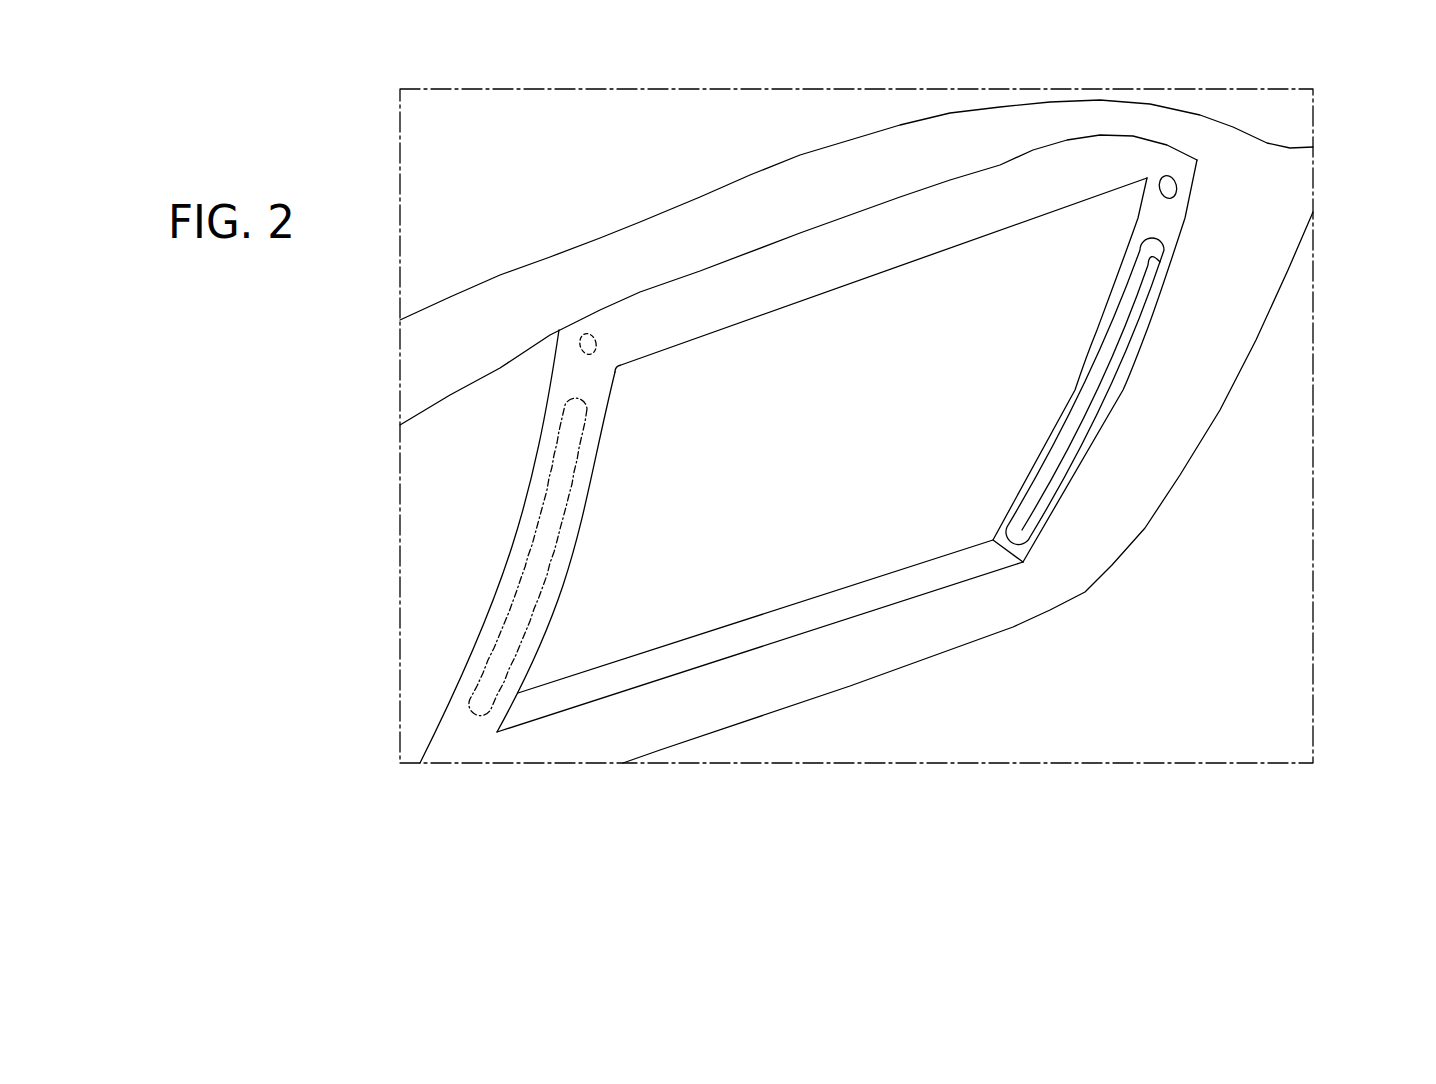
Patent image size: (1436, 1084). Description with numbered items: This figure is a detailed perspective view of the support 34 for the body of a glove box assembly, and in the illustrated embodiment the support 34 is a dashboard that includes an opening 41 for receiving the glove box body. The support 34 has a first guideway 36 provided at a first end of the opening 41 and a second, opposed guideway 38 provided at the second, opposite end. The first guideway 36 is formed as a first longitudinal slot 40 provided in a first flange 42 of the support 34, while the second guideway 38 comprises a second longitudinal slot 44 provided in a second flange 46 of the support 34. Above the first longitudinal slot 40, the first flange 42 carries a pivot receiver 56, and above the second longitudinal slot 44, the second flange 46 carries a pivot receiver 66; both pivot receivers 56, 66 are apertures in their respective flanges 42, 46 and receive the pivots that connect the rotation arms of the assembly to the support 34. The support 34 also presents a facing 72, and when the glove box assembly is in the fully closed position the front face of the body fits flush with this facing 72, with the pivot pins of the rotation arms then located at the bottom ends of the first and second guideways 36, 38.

The support 34 is at (842, 436).
The first guideway 36 is at (1197, 361).
The second guideway 38 is at (509, 472).
The first longitudinal slot 40 is at (1098, 418).
The opening 41 is at (900, 263).
The first flange 42 is at (1158, 228).
The second longitudinal slot 44 is at (493, 643).
The second flange 46 is at (598, 448).
The pivot receiver 56 is at (1177, 191).
The pivot receiver 66 is at (587, 333).
The facing 72 is at (732, 700).